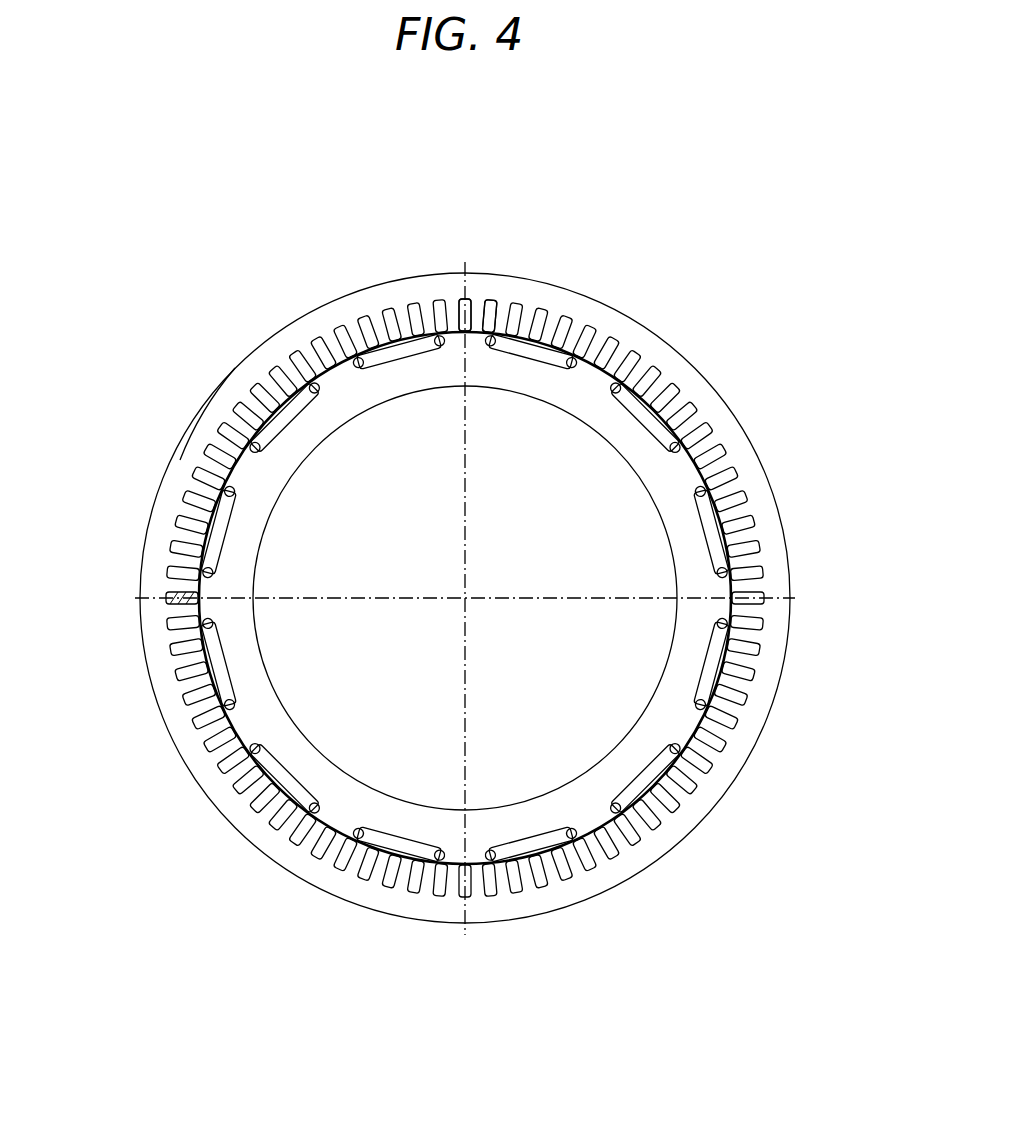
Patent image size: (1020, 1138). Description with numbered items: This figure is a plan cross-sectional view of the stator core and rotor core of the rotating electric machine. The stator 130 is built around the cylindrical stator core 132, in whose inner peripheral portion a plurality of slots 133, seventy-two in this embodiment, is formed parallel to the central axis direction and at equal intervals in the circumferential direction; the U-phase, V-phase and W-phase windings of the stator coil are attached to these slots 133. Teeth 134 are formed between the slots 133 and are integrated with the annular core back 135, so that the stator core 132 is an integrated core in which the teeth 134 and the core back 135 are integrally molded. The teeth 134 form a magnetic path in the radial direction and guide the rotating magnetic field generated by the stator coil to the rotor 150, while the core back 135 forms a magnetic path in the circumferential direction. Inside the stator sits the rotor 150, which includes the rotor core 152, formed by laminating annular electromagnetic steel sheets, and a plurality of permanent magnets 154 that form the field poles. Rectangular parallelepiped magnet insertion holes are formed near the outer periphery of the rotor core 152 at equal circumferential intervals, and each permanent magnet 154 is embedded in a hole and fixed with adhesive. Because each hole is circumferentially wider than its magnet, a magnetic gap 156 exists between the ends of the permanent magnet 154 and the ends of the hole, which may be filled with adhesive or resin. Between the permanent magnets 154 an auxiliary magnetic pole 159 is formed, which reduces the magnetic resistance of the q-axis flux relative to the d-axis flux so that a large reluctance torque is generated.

The stator 130 is at (243, 357).
The stator core 132 is at (400, 293).
The slots 133 is at (487, 295).
The teeth 134 is at (473, 303).
The core back 135 is at (195, 437).
The rotor 150 is at (320, 447).
The rotor core 152 is at (413, 380).
The permanent magnets 154 is at (660, 385).
The magnetic gap 156 is at (700, 492).
The auxiliary magnetic pole 159 is at (718, 428).